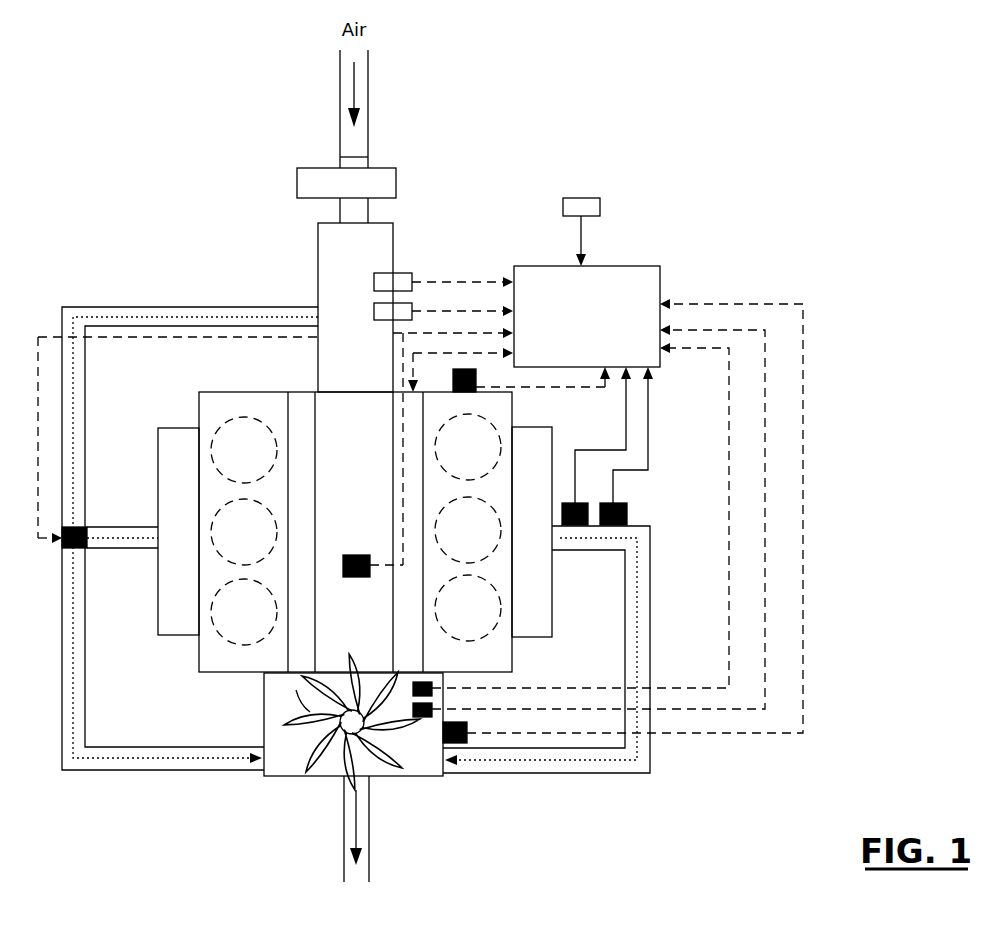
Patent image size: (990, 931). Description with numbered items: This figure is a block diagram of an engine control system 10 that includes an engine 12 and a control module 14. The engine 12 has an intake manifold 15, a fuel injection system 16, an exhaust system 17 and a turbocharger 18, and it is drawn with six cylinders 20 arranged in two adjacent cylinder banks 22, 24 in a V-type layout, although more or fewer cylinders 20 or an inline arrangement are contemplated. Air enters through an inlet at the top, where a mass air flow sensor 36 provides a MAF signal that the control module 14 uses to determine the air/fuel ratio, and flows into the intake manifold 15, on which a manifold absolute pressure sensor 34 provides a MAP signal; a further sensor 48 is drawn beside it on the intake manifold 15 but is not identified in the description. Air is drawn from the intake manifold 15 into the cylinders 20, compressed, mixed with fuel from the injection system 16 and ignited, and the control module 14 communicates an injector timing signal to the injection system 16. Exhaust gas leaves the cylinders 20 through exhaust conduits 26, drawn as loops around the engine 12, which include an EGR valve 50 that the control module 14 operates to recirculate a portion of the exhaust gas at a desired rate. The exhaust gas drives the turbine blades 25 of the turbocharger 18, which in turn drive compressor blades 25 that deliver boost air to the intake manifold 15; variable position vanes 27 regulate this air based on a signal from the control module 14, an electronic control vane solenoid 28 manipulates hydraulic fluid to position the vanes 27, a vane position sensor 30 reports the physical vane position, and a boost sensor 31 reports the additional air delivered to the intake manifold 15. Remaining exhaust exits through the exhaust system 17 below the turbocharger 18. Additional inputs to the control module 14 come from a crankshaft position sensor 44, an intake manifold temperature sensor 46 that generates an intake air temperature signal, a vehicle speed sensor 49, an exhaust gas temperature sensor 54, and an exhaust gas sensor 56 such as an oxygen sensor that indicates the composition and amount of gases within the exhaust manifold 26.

The engine control system 10 is at (762, 105).
The engine 12 is at (262, 392).
The control module 14 is at (622, 266).
The intake manifold 15 is at (318, 240).
The fuel injection system 16 is at (410, 618).
The exhaust system 17 is at (343, 850).
The turbocharger 18 is at (290, 776).
The cylinders 20 is at (490, 630).
The cylinder bank 22 is at (199, 405).
The cylinder bank 24 is at (512, 402).
The turbine blades 25 is at (325, 760).
The exhaust conduits 26 is at (650, 590).
The variable position vanes 27 is at (305, 695).
The electronic control vane solenoid 28 is at (443, 740).
The vane position sensor 30 is at (425, 683).
The boost sensor 31 is at (418, 717).
The manifold absolute pressure sensor 34 is at (392, 272).
The mass air flow sensor 36 is at (396, 168).
The crankshaft position sensor 44 is at (466, 369).
The intake manifold temperature sensor 46 is at (353, 555).
The intake air temperature sensor 48 is at (392, 300).
The vehicle speed sensor 49 is at (585, 198).
The EGR valve 50 is at (87, 525).
The exhaust gas temperature sensor 54 is at (580, 503).
The exhaust gas sensor 56 is at (617, 503).